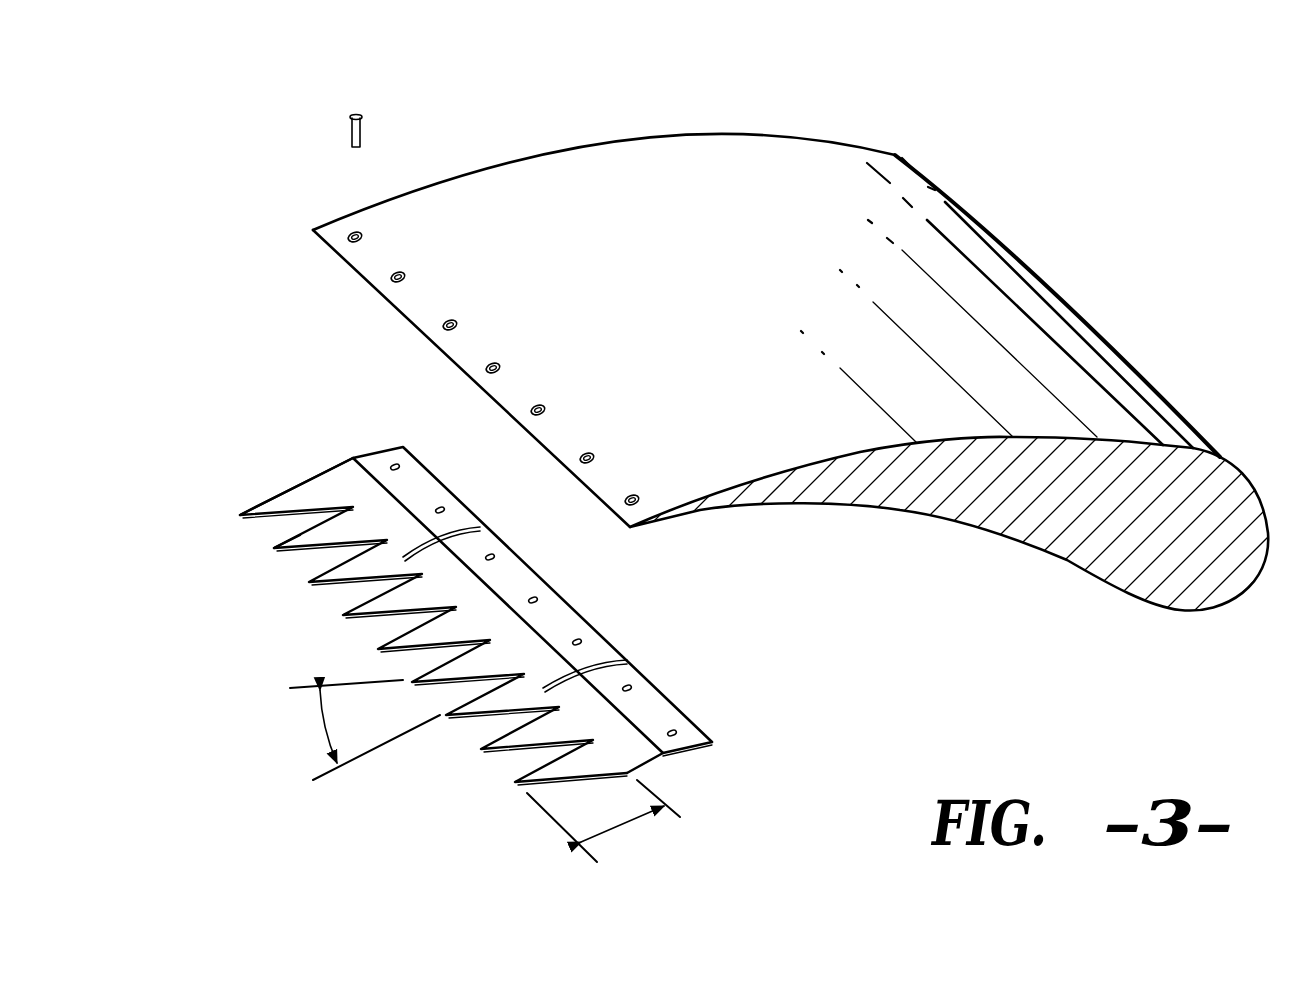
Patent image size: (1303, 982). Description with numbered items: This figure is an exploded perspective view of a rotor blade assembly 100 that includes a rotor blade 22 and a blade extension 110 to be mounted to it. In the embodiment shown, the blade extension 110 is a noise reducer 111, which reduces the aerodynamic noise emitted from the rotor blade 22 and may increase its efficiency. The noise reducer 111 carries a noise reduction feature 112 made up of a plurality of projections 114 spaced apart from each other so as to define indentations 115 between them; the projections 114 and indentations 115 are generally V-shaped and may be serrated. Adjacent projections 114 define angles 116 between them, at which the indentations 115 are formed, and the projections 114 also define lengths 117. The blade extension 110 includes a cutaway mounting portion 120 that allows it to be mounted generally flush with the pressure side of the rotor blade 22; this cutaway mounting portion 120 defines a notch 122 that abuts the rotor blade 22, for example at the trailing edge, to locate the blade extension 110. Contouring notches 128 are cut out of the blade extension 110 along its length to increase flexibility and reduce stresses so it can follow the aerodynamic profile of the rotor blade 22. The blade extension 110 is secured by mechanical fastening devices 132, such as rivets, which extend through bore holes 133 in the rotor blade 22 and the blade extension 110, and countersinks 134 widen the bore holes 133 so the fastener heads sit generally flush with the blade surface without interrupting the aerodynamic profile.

The rotor blade 22 is at (538, 134).
The rotor blade assembly 100 is at (1156, 173).
The blade extension 110 is at (480, 637).
The noise reducer 111 is at (343, 503).
The noise reduction feature 112 is at (413, 603).
The projections 114 is at (395, 621).
The indentations 115 is at (265, 534).
The angles 116 is at (322, 738).
The lengths 117 is at (627, 823).
The cutaway mounting portion 120 is at (575, 619).
The notch 122 is at (646, 718).
The contouring notches 128 is at (639, 647).
The mechanical fastening devices 132 is at (339, 127).
The bore holes 133 is at (396, 286).
The countersinks 134 is at (396, 274).